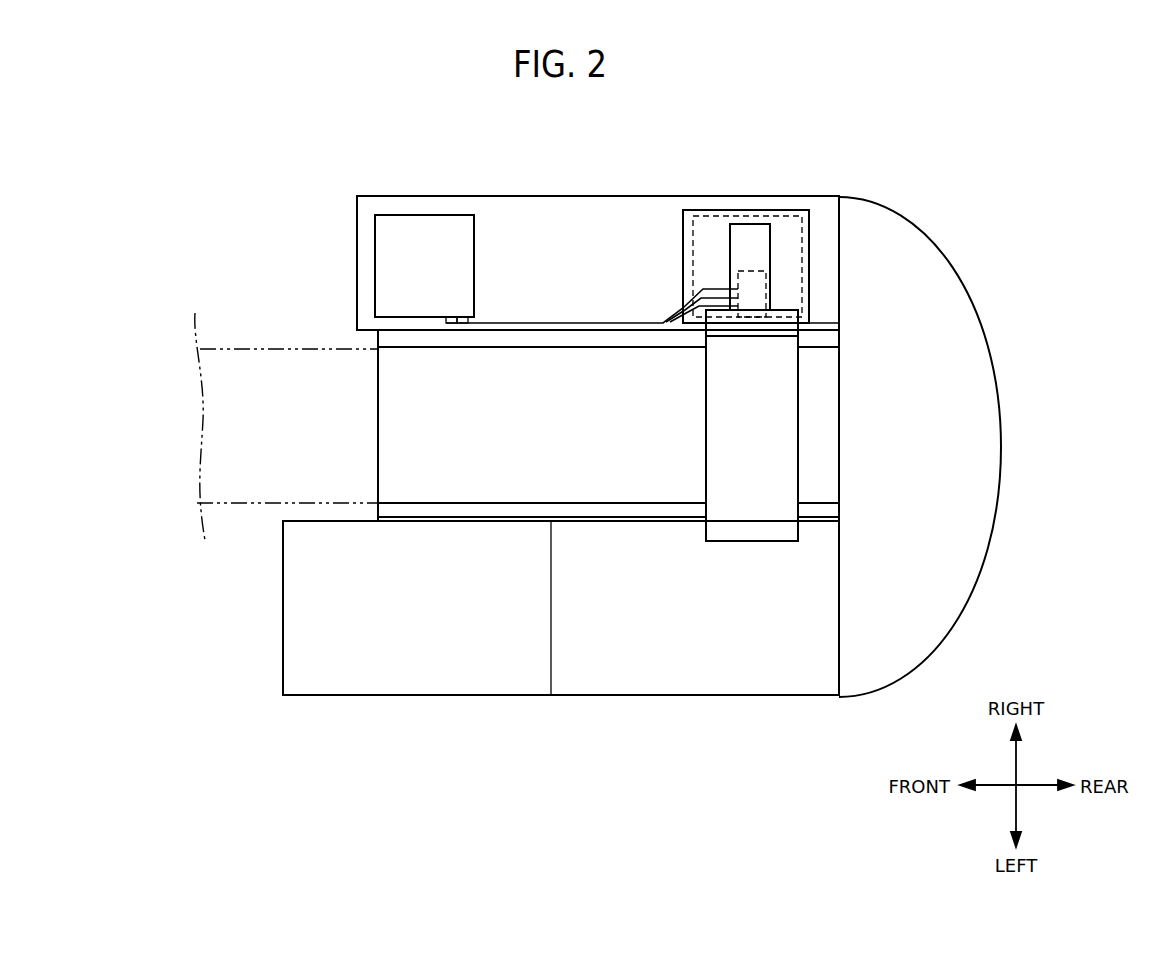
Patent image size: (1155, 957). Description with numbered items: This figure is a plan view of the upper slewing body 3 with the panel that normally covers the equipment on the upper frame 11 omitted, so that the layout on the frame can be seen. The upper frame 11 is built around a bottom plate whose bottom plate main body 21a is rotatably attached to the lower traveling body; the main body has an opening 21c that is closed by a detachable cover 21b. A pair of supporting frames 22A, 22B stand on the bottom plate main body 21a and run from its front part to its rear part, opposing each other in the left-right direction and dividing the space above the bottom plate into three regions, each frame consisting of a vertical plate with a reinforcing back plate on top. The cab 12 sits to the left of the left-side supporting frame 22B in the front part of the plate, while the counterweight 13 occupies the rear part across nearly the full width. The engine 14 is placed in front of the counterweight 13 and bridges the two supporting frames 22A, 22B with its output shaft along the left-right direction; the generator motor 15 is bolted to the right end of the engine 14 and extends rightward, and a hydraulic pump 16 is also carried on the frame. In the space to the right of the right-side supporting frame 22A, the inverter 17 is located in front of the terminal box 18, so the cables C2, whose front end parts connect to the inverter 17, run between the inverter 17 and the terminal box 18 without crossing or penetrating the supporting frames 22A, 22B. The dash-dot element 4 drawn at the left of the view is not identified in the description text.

The upper slewing body 3 is at (960, 165).
The counterweight 13 is at (1001, 448).
The upper frame 11 is at (556, 224).
The inverter 17 is at (422, 215).
The cables C2 is at (553, 322).
The cover 21b is at (703, 210).
The opening 21c is at (801, 244).
The hydraulic pump 16 is at (730, 249).
The terminal box 18 is at (767, 287).
The generator motor 15 is at (748, 338).
The engine 14 is at (798, 455).
The supporting frame 22A is at (414, 340).
The supporting frame 22B is at (411, 515).
The bottom plate main body 21a is at (378, 425).
The drawer unit 4 is at (272, 349).
The cab 12 is at (390, 696).